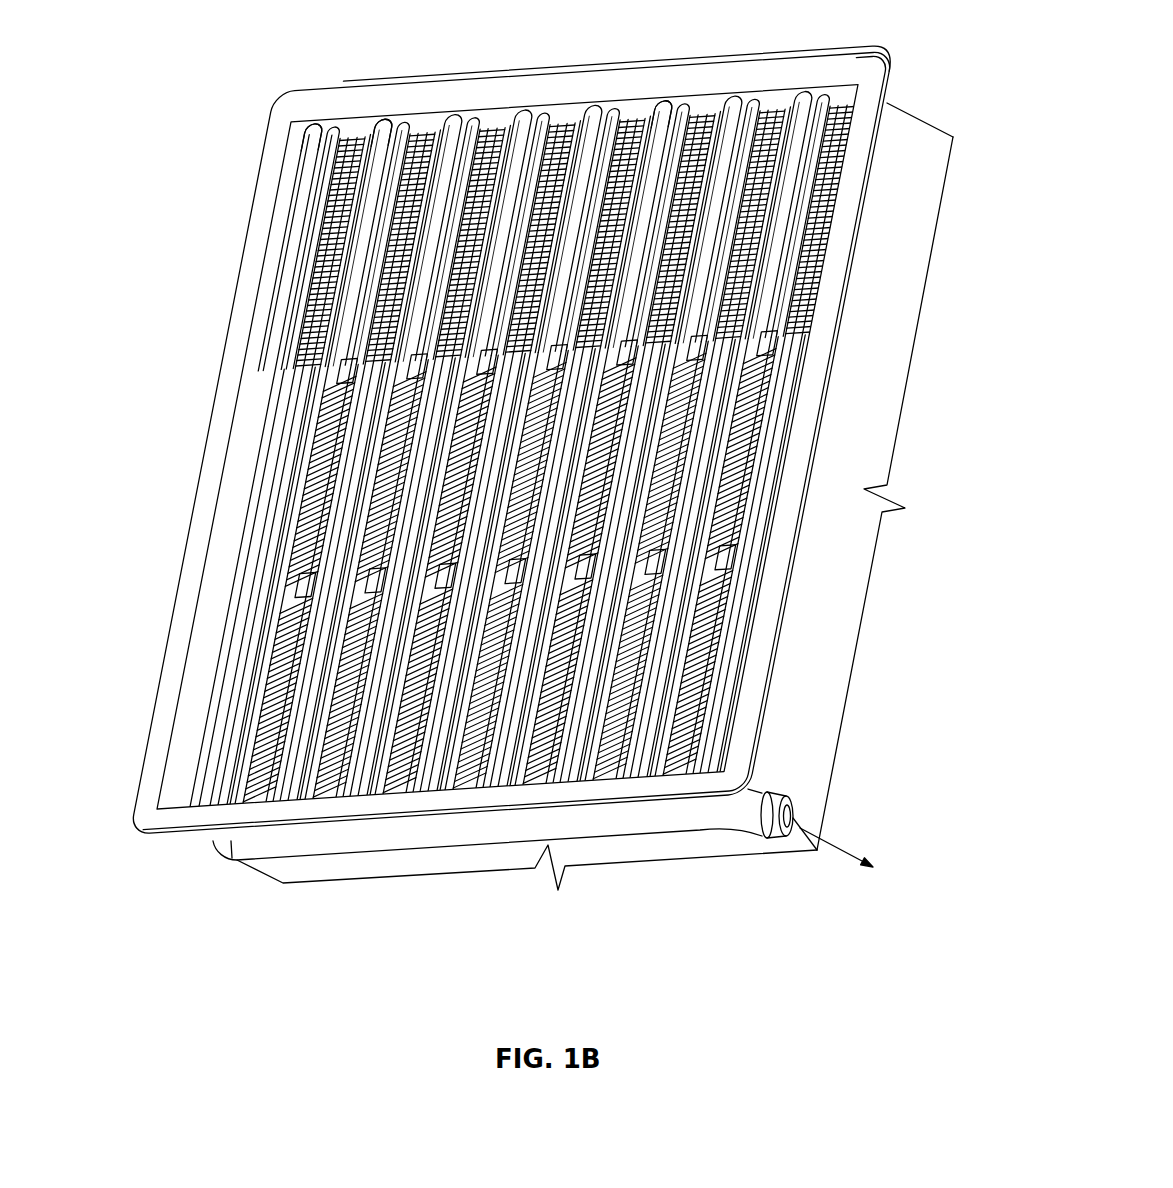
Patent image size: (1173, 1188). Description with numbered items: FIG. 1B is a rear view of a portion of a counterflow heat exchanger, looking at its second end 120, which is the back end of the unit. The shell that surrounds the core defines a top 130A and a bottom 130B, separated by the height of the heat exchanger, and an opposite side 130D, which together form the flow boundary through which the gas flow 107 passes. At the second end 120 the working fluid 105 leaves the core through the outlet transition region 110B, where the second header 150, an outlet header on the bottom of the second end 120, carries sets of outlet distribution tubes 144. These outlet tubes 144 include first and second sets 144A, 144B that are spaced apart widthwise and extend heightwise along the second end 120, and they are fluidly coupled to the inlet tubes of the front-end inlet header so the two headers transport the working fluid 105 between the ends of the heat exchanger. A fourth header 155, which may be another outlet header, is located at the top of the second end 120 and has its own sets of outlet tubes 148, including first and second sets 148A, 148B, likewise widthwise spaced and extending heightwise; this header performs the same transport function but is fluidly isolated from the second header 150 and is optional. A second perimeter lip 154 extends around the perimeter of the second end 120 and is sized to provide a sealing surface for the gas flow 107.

The working fluid 105 is at (843, 862).
The gas flow 107 is at (182, 452).
The outlet transition region 110B is at (323, 260).
The second end 120 is at (207, 352).
The top 130A is at (913, 110).
The bottom 130B is at (313, 870).
The side 130D is at (813, 697).
The sets of outlet distribution tubes 144 is at (250, 693).
The first set of outlet tubes 144A is at (370, 783).
The second set of outlet tubes 144B is at (583, 767).
The sets of outlet tubes 148 is at (672, 110).
The first set of outlet tubes 148A is at (320, 128).
The second set of outlet tubes 148B is at (395, 125).
The second header 150 is at (487, 840).
The second perimeter lip 154 is at (152, 763).
The fourth header 155 is at (520, 65).